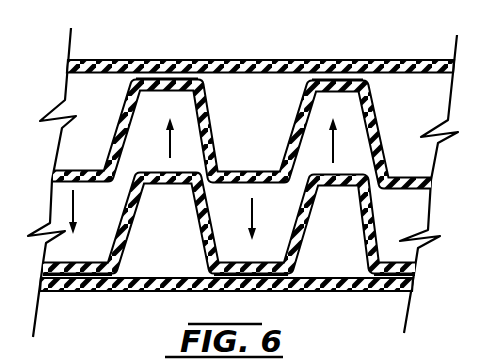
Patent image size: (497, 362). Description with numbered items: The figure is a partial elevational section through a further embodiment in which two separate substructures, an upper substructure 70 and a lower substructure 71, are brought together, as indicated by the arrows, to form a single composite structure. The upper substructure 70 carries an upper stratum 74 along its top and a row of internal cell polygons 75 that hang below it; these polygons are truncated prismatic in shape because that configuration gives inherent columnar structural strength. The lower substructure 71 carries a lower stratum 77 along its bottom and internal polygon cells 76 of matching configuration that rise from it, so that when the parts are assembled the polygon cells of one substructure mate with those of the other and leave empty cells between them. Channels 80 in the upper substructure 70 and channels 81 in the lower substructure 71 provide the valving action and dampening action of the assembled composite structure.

The upper substructure 70 is at (382, 55).
The lower substructure 71 is at (345, 302).
The upper stratum 74 is at (240, 58).
The internal cell polygons 75 is at (122, 118).
The internal polygon cells 76 is at (374, 222).
The lower stratum 77 is at (168, 291).
The channels 80 is at (167, 61).
The channels 81 is at (72, 292).